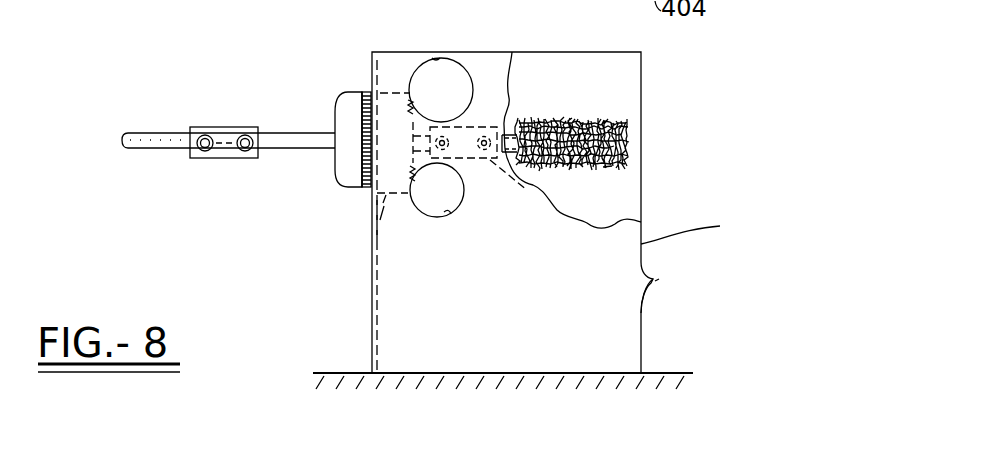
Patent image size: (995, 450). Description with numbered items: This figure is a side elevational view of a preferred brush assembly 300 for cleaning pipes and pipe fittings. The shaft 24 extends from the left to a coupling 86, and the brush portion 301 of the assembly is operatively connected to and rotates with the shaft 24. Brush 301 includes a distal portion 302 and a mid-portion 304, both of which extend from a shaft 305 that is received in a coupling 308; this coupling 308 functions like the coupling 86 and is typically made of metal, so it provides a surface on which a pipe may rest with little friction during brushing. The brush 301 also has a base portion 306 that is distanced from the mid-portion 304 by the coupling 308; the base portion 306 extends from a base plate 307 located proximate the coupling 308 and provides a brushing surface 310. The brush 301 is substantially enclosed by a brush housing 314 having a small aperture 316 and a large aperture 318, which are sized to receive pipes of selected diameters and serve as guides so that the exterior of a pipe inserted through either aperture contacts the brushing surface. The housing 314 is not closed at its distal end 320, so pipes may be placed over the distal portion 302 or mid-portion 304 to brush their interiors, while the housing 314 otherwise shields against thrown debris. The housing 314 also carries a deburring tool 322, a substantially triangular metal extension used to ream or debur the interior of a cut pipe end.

The shaft 24 is at (143, 135).
The coupling 86 is at (232, 128).
The brush assembly 300 is at (262, 216).
The brush portion 301 is at (356, 74).
The distal portion 302 is at (632, 143).
The mid-portion 304 is at (603, 167).
The shaft 305 is at (508, 128).
The base portion 306 is at (372, 228).
The base plate 307 is at (353, 106).
The coupling 308 is at (533, 191).
The brushing surface 310 is at (415, 98).
The brush housing 314 is at (648, 84).
The small aperture 316 is at (448, 213).
The large aperture 318 is at (436, 58).
The distal end 320 is at (704, 229).
The deburring tool 322 is at (659, 279).